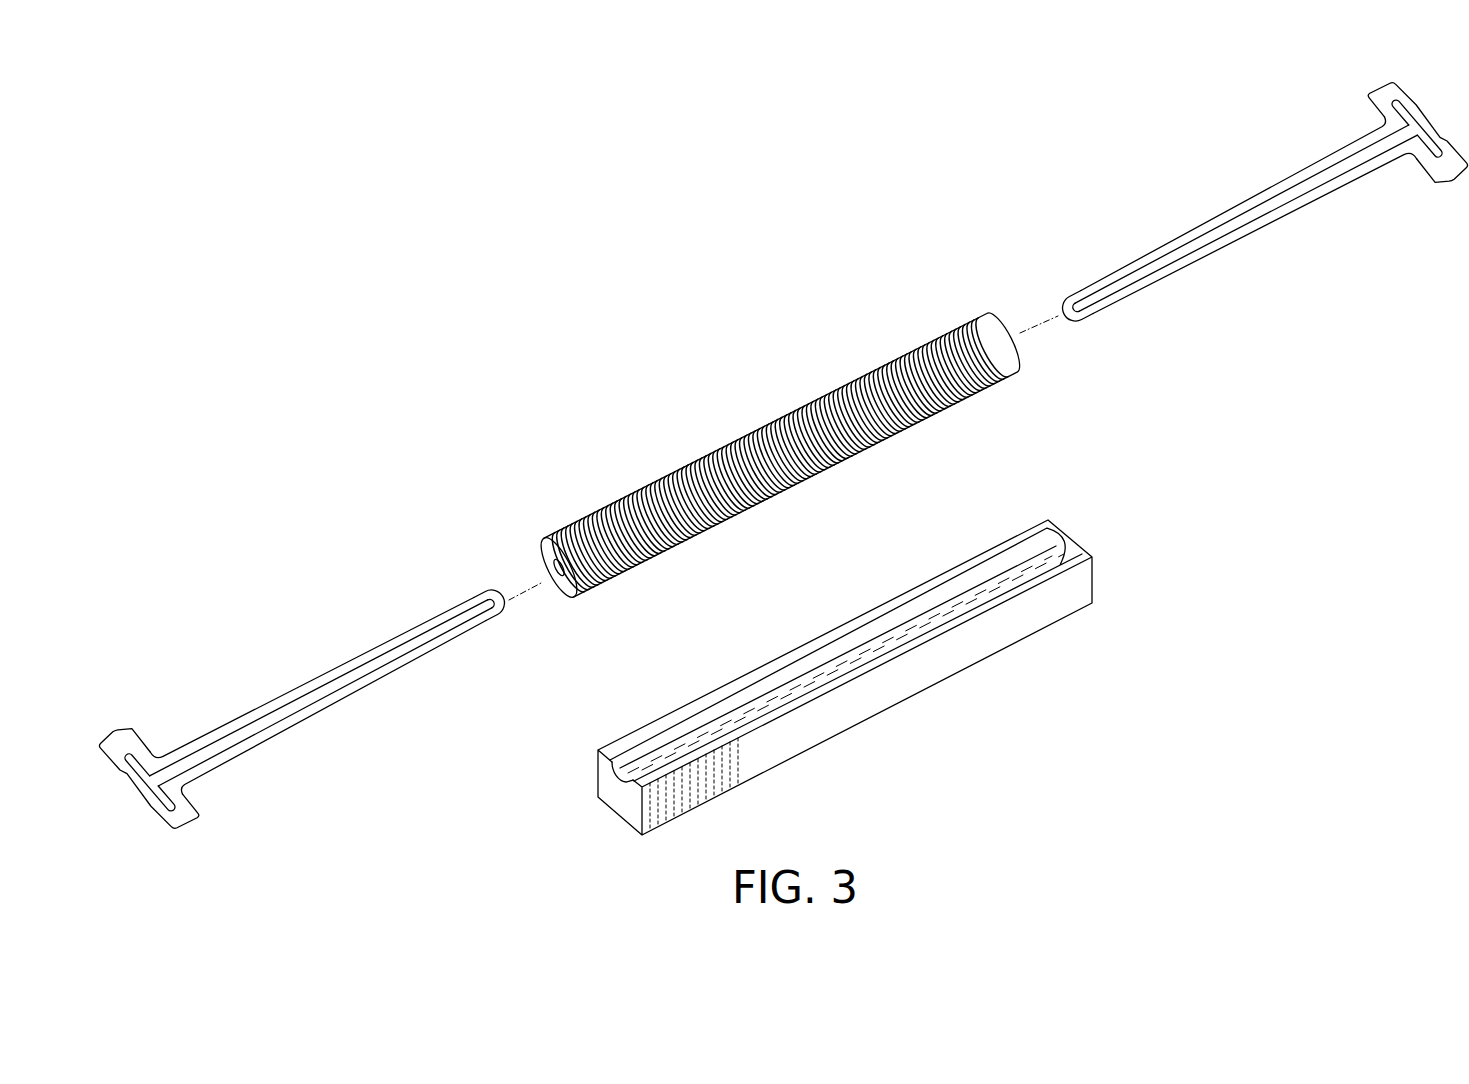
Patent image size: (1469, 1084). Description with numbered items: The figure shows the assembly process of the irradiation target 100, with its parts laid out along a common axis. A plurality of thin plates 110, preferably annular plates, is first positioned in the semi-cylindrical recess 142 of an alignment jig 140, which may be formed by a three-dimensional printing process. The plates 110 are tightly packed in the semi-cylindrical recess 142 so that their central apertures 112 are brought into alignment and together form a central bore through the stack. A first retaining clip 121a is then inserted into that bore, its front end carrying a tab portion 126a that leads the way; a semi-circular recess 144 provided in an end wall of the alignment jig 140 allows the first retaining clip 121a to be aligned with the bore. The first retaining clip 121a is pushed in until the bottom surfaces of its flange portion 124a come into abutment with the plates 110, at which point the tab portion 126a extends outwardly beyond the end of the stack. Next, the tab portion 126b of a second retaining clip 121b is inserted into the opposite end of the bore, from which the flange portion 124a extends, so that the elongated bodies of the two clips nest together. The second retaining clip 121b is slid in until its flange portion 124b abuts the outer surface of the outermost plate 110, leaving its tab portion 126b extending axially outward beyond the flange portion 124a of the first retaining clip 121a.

The irradiation target 100 is at (540, 378).
The thin plates 110 is at (750, 437).
The central apertures 112 is at (556, 565).
The first retaining clip 121a is at (302, 719).
The second retaining clip 121b is at (1244, 256).
The flange portion 124a is at (162, 822).
The flange portion 124b is at (1440, 184).
The tab portion 126a is at (488, 583).
The tab portion 126b is at (1069, 320).
The alignment jig 140 is at (788, 682).
The semi-cylindrical recess 142 is at (806, 663).
The semi-circular recess 144 is at (612, 773).